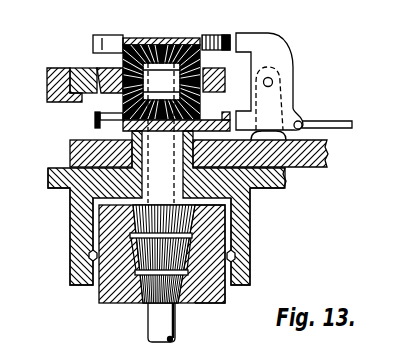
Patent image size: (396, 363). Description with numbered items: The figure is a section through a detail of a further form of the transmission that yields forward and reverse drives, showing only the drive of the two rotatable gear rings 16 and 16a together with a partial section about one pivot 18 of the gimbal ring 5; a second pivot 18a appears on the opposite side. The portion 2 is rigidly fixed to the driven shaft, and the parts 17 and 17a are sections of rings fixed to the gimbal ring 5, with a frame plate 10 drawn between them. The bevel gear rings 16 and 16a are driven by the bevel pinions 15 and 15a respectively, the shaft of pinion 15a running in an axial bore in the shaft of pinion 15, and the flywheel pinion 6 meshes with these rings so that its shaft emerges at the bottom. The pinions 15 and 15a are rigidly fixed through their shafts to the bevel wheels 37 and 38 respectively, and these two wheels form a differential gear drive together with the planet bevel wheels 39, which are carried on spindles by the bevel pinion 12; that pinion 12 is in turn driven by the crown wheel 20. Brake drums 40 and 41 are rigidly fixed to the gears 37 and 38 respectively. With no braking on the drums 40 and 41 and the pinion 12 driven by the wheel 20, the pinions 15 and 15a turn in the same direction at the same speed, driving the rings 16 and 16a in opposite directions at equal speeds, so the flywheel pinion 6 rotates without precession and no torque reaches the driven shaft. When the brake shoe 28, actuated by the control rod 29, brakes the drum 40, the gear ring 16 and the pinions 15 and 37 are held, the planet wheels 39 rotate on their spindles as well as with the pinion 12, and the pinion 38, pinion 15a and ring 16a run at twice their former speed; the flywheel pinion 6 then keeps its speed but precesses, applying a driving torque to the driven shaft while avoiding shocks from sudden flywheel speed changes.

The portion 2 is at (72, 148).
The gimbal ring 5 is at (48, 187).
The flywheel pinion 6 is at (148, 302).
The frame plate 10 is at (117, 169).
The bevel pinion 12 is at (107, 67).
The bevel pinion 15 is at (133, 210).
The bevel pinion 15a is at (190, 248).
The bevel gear ring 16 is at (100, 301).
The bevel gear ring 16a is at (212, 303).
The ring section 17 is at (72, 284).
The ring section 17a is at (247, 286).
The pivot 18 is at (89, 255).
The screw 18a is at (236, 258).
The crown wheel 20 is at (75, 67).
The brake shoe 28 is at (241, 37).
The control rod 29 is at (337, 122).
The bevel wheel 37 is at (100, 118).
The bevel wheel 38 is at (158, 40).
The planet bevel wheels 39 is at (129, 44).
The brake drum 40 is at (93, 115).
The brake drum 41 is at (222, 35).